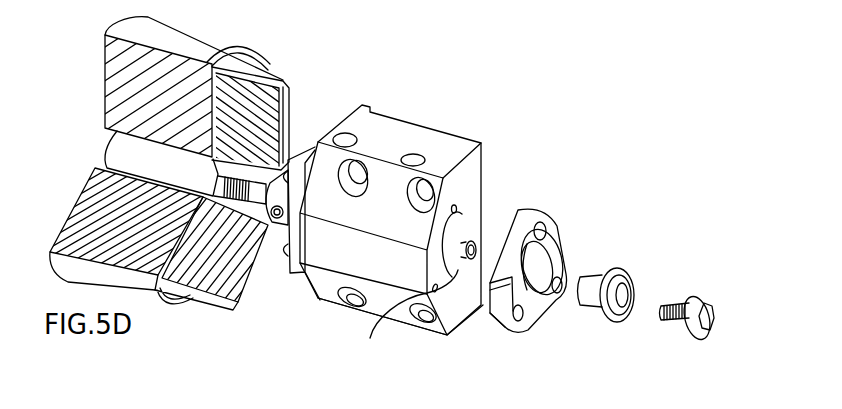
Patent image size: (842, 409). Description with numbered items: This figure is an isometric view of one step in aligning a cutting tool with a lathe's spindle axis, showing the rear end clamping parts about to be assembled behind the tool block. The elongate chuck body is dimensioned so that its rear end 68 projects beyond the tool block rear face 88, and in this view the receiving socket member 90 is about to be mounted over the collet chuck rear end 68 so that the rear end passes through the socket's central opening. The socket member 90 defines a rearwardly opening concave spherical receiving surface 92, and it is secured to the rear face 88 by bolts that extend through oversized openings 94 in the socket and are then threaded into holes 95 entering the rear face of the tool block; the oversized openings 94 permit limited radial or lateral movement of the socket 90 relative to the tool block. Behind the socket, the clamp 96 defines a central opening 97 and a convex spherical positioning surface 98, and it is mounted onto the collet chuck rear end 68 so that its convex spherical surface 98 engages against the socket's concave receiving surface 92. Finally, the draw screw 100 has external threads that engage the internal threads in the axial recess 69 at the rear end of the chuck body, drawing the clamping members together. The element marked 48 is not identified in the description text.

The manifold bore 48 is at (392, 312).
The chuck body rear end 68 is at (467, 240).
The axial recess 69 is at (448, 333).
The tool block rear face 88 is at (477, 158).
The receiving socket member 90 is at (500, 313).
The concave spherical receiving surface 92 is at (543, 292).
The oversized openings 94 is at (541, 230).
The holes 95 is at (457, 208).
The clamp 96 is at (632, 254).
The central opening 97 is at (618, 298).
The convex spherical positioning surface 98 is at (603, 277).
The draw screw 100 is at (710, 323).